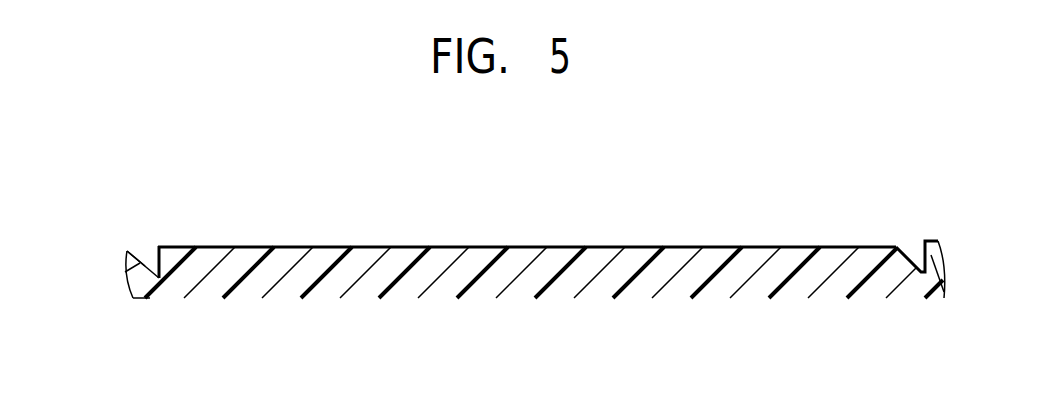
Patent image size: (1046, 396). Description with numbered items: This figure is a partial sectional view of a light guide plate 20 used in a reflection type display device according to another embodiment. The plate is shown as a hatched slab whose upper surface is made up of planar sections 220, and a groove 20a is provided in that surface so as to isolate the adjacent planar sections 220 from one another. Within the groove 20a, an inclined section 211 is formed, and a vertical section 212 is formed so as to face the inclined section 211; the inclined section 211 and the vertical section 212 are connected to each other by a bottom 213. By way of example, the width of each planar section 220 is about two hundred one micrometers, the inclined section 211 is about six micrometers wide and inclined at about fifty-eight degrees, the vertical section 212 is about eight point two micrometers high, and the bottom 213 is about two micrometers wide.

The light guide plate 20 is at (706, 269).
The groove 20a is at (913, 250).
The planar section 220 is at (483, 246).
The inclined section 211 is at (127, 251).
The vertical section 212 is at (155, 254).
The bottom 213 is at (150, 294).